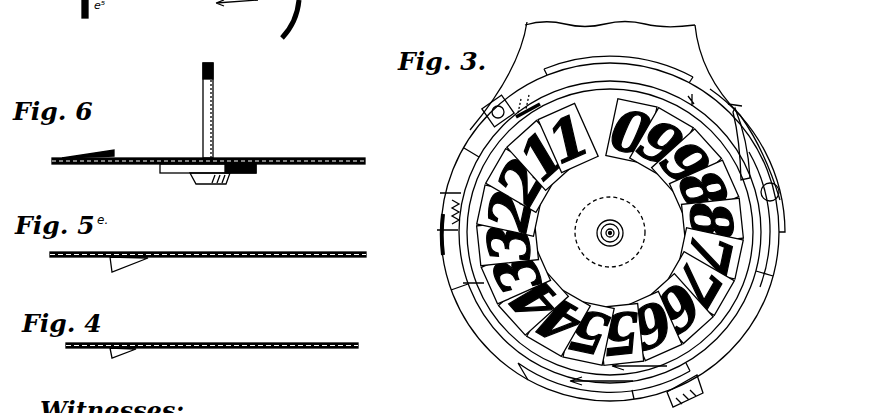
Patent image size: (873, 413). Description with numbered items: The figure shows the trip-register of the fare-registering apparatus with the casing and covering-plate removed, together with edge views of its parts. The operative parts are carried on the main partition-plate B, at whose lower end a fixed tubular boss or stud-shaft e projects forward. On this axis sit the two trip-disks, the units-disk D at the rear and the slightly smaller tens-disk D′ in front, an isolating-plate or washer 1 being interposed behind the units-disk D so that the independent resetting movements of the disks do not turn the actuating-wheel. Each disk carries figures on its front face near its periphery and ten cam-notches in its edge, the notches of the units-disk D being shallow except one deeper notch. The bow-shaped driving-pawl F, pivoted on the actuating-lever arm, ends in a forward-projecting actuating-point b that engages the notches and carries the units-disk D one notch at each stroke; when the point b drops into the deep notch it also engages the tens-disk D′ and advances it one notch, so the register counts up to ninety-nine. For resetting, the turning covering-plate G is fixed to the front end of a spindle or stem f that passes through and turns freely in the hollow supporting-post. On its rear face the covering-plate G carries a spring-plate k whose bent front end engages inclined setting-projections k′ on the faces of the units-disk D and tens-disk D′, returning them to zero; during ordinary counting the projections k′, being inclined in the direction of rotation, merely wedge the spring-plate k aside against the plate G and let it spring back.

In FIG. 3, the isolating-plate or washer 1 is at (484, 116).
In FIG. 5, the units-disk D is at (208, 245).
In FIG. 3, the units-disk D is at (618, 74).
In FIG. 3, the main partition-plate B is at (625, 111).
In FIG. 3, the actuating-point b is at (688, 90).
In FIG. 3, the driving-pawl F is at (738, 136).
In FIG. 6, the spindle or stem f is at (215, 110).
In FIG. 3, the spindle or stem f is at (605, 230).
In FIG. 3, the tubular boss or stud-shaft e is at (619, 228).
In FIG. 4, the tens-disk D′ is at (212, 335).
In FIG. 3, the tens-disk D′ is at (612, 238).
In FIG. 6, the spring-plate k is at (104, 152).
In FIG. 6, the turning covering-plate G is at (208, 160).
In FIG. 5, the setting-projections k′ is at (129, 273).
In FIG. 4, the setting-projections k′ is at (123, 363).